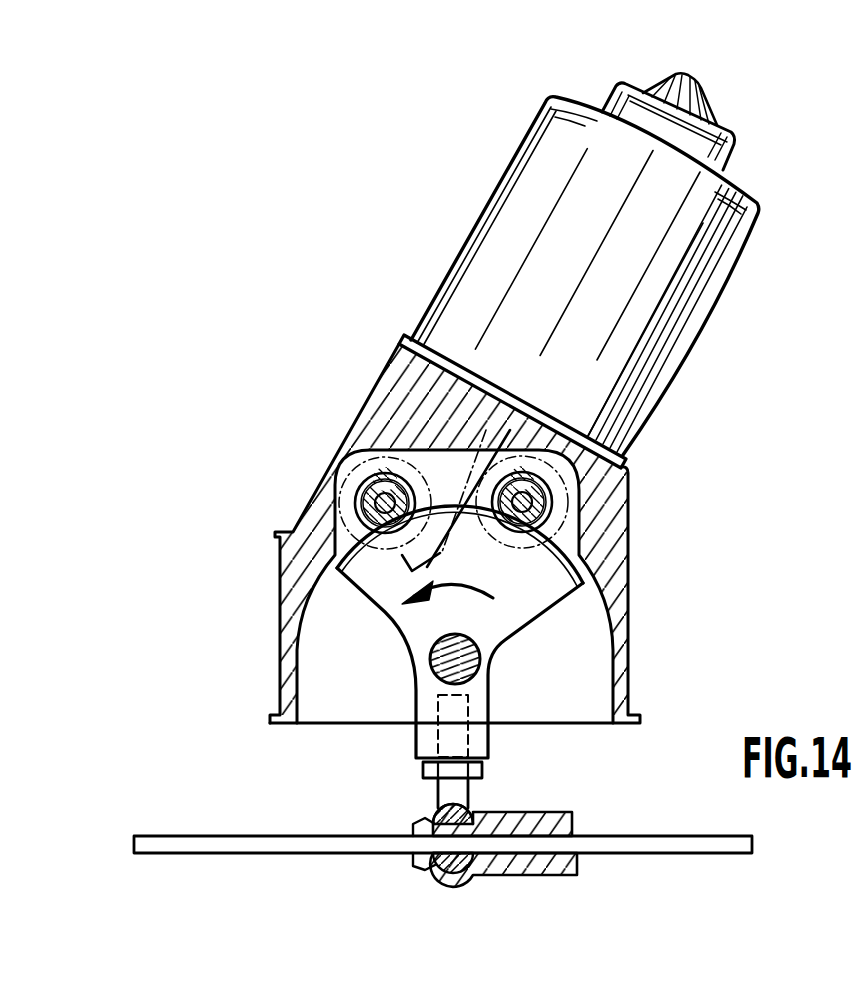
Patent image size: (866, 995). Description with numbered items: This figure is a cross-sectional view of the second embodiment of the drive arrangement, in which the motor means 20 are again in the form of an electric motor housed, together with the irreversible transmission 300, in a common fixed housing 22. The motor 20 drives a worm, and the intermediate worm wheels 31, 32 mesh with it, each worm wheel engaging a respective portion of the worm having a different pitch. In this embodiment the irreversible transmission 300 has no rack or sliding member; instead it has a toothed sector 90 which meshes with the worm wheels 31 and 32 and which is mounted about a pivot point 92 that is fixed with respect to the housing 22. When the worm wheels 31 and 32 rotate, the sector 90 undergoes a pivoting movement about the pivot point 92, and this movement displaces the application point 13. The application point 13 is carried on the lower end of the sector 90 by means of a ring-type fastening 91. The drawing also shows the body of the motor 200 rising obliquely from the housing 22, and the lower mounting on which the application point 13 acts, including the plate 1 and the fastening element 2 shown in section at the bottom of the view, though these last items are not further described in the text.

The electric motor 20 is at (668, 392).
The cylinder 200 is at (421, 299).
The housing 22 is at (369, 393).
The worm wheel 31 is at (357, 487).
The worm wheel 32 is at (553, 504).
The toothed sector 90 is at (549, 624).
The pivot point 92 is at (430, 668).
The irreversible transmission 300 is at (543, 671).
The ring-type fastening 91 is at (472, 800).
The plate 1 is at (323, 837).
The nut 2 is at (507, 879).
The application point 13 is at (420, 830).